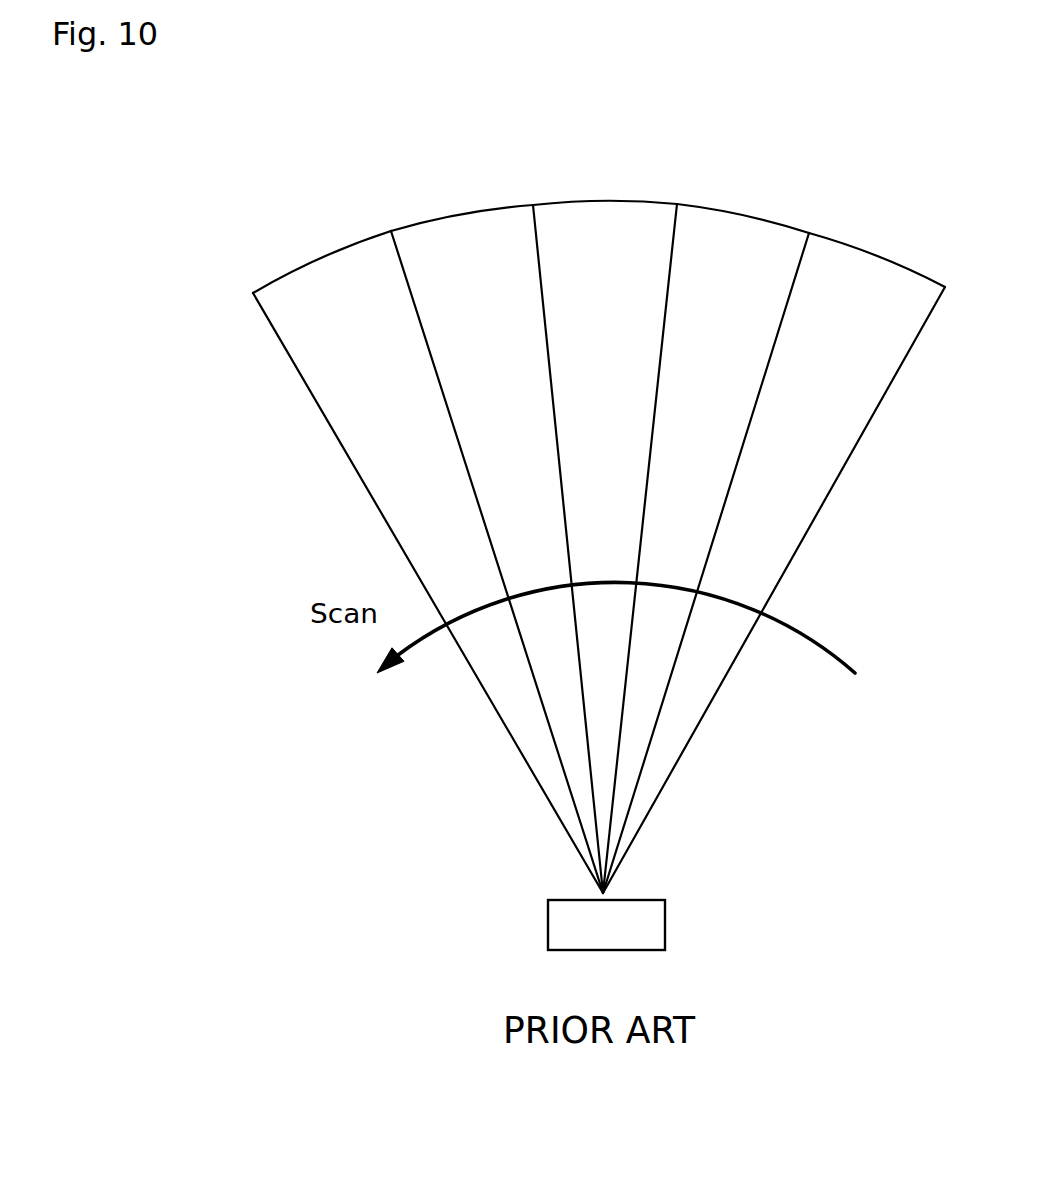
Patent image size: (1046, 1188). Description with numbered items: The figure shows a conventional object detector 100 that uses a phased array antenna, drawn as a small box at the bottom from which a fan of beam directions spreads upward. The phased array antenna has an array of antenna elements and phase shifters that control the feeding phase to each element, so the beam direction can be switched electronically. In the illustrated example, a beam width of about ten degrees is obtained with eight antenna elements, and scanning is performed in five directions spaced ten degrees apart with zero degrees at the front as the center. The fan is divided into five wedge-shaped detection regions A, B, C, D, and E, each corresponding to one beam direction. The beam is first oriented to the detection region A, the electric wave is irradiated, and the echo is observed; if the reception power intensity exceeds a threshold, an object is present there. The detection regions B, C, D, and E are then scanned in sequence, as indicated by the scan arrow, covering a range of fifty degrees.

The object detector 100 is at (665, 932).
The detection region A is at (774, 563).
The detection region B is at (706, 548).
The detection region C is at (605, 547).
The detection region D is at (497, 549).
The detection region E is at (428, 562).